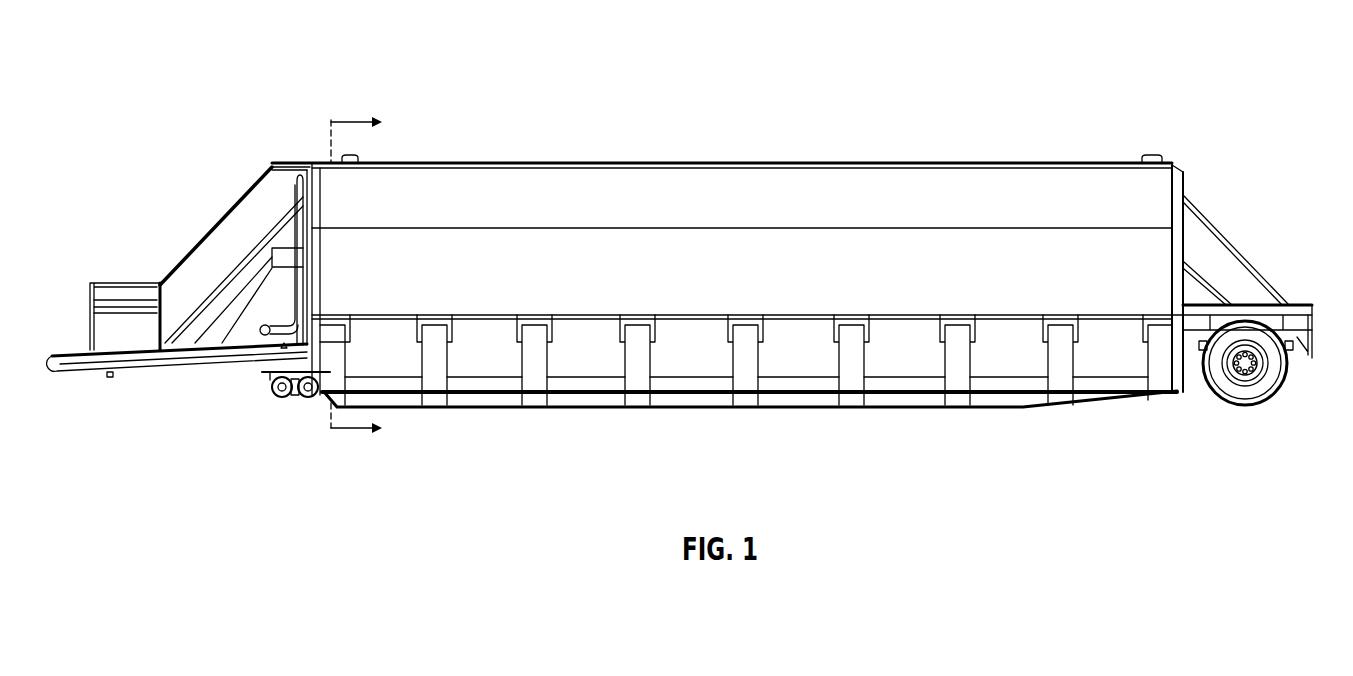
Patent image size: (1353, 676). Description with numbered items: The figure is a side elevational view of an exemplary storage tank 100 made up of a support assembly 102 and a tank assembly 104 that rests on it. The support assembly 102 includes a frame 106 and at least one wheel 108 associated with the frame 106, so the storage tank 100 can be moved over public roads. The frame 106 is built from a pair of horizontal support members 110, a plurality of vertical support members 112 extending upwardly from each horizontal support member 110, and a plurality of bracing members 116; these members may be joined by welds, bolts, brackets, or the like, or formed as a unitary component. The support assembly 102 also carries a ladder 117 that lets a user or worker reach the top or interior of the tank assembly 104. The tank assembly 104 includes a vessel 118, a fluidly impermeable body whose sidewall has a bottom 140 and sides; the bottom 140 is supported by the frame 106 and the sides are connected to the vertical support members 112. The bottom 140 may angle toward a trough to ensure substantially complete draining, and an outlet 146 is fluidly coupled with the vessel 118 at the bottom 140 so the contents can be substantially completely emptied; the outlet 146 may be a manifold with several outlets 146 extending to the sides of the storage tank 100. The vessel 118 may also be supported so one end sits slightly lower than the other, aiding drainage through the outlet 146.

The storage tank 100 is at (1197, 39).
The support assembly 102 is at (466, 414).
The tank assembly 104 is at (827, 151).
The frame 106 is at (793, 410).
The wheel 108 is at (1240, 403).
The horizontal support member 110 is at (593, 408).
The vertical support member 112 is at (533, 365).
The bracing member 116 is at (270, 313).
The ladder 117 is at (277, 225).
The vessel 118 is at (618, 162).
The bottom 140 is at (685, 382).
The outlet 146 is at (270, 392).